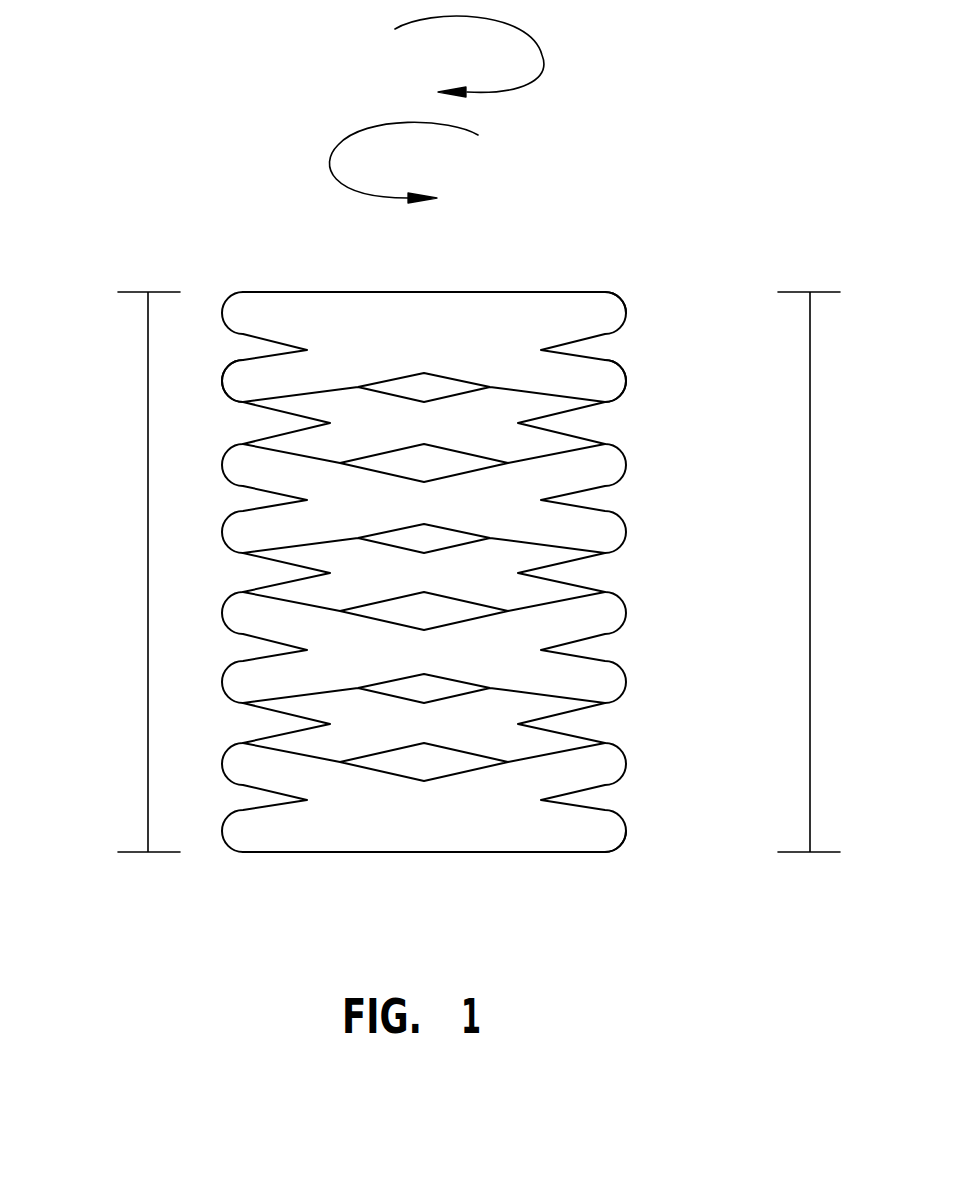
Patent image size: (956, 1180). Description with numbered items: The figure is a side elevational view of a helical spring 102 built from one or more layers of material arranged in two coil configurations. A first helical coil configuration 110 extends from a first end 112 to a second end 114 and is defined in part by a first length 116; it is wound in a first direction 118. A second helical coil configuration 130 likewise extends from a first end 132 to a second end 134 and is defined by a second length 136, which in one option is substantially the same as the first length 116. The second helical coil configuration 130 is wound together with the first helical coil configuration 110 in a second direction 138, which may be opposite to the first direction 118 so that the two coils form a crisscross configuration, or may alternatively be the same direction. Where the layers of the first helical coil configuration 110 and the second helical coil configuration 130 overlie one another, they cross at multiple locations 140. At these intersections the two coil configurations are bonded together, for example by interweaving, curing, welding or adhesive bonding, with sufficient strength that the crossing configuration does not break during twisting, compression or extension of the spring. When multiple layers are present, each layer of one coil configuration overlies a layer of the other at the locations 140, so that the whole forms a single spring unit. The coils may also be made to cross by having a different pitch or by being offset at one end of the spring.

The helical spring 102 is at (133, 933).
The first helical coil configuration 110 is at (255, 385).
The first end 112 is at (347, 291).
The second end 114 is at (362, 852).
The first length 116 is at (148, 572).
The first direction 118 is at (466, 64).
The second helical coil configuration 130 is at (568, 387).
The first end 132 is at (462, 291).
The second end 134 is at (560, 853).
The second length 136 is at (813, 570).
The second direction 138 is at (406, 168).
The locations 140 is at (427, 338).